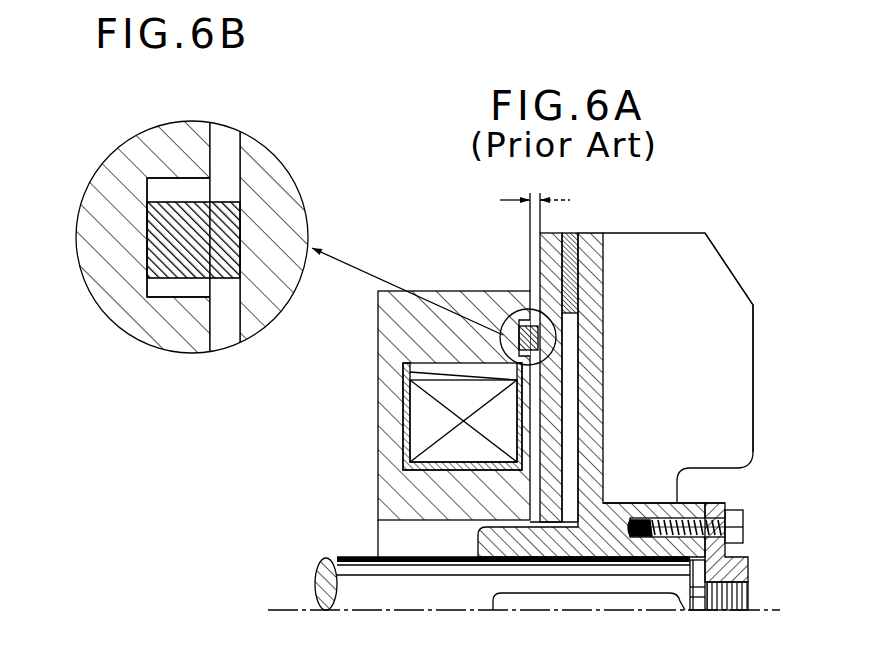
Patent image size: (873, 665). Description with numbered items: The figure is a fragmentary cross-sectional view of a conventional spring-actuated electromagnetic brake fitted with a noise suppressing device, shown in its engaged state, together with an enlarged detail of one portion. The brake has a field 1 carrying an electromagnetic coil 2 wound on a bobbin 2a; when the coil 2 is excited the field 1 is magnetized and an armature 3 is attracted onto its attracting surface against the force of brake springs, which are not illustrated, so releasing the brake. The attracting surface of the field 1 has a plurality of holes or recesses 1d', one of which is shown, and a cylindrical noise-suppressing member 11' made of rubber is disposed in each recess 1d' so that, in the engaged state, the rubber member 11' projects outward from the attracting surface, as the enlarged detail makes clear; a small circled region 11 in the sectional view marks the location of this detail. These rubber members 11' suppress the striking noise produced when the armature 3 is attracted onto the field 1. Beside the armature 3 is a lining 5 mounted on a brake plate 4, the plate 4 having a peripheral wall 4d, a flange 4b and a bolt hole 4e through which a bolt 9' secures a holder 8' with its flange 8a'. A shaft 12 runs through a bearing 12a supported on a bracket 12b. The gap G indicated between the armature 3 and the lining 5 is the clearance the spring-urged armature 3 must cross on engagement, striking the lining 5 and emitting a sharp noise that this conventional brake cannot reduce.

In FIG. 6B, the field 1 is at (112, 193).
In FIG. 6A, the field 1 is at (372, 328).
In FIG. 6B, the recess 1d' is at (161, 193).
In FIG. 6B, the noise-suppressing member 11' is at (203, 224).
In FIG. 6B, the armature 3 is at (275, 200).
In FIG. 6A, the armature 3 is at (551, 230).
In FIG. 6A, the electromagnetic coil 2 is at (430, 410).
In FIG. 6A, the bobbin 2a is at (407, 370).
In FIG. 6A, the brake plate 4 is at (596, 229).
In FIG. 6A, the rotor flange 4b is at (647, 503).
In FIG. 6A, the rotor peripheral wall 4d is at (717, 282).
In FIG. 6A, the bolt hole 4e is at (638, 517).
In FIG. 6A, the lining 5 is at (572, 229).
In FIG. 6A, the bearing holder 8' is at (756, 542).
In FIG. 6A, the holder flange 8a' is at (759, 478).
In FIG. 6A, the bolt 9' is at (723, 512).
In FIG. 6A, the shaft 12 is at (310, 565).
In FIG. 6A, the bearing 12a is at (737, 592).
In FIG. 6A, the shaft bracket 12b is at (575, 600).
In FIG. 6A, the gap G is at (535, 229).
In FIG. 6A, the magnet 11 is at (528, 337).